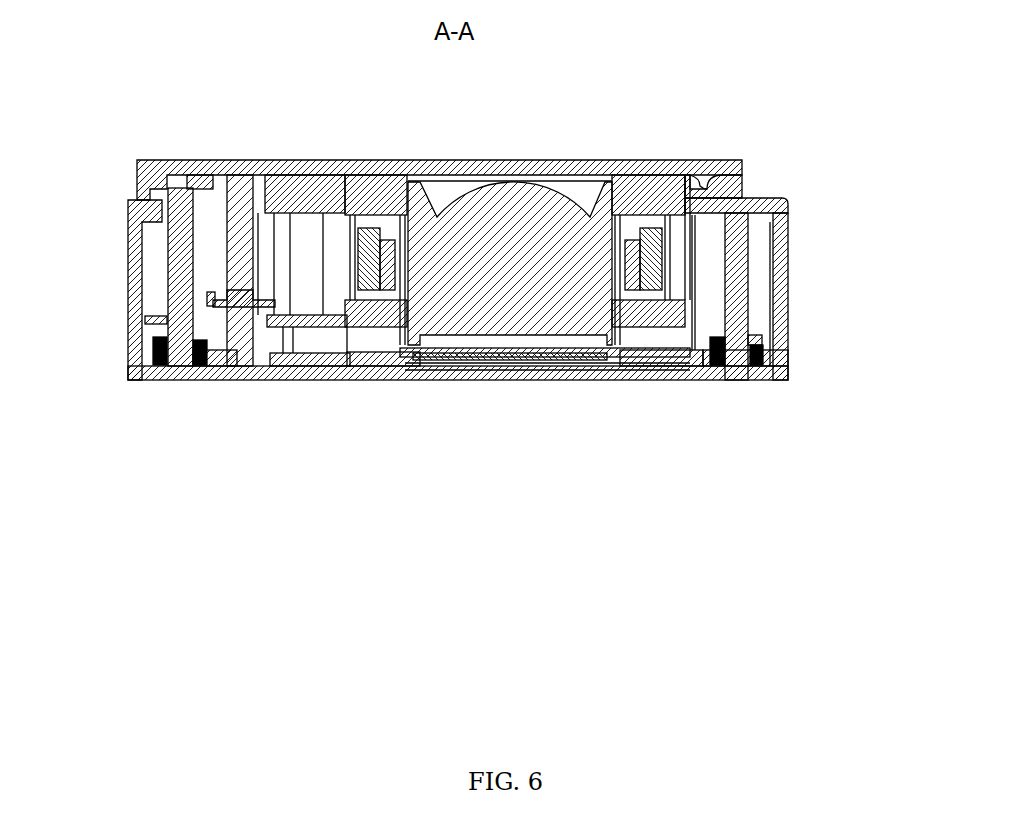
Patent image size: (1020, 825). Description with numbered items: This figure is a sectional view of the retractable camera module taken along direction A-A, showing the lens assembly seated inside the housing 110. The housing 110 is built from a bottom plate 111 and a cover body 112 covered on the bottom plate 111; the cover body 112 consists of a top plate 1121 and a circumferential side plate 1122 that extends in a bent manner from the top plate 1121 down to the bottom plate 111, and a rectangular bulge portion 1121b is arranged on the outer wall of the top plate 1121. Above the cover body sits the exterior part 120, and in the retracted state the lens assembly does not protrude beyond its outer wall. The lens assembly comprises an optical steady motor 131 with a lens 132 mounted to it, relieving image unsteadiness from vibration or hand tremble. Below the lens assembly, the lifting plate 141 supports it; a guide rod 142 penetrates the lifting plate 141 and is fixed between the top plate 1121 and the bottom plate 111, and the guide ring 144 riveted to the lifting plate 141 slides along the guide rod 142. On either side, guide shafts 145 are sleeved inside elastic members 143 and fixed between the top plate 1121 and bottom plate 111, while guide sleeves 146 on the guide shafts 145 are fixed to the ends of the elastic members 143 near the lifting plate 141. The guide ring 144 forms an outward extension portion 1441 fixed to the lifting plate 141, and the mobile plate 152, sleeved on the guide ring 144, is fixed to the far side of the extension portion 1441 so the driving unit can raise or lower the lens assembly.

The housing 110 is at (541, 277).
The bottom plate 111 is at (520, 351).
The cover body 112 is at (868, 208).
The top plate 1121 is at (790, 207).
The bulge portion 1121b is at (197, 170).
The circumferential side plate 1122 is at (790, 243).
The exterior part 120 is at (233, 168).
The optical steady motor 131 is at (648, 170).
The lens 132 is at (569, 183).
The lifting plate 141 is at (318, 380).
The guide rod 142 is at (222, 380).
The elastic members 143 is at (145, 342).
The guide ring 144 is at (275, 380).
The extension portion 1441 is at (213, 310).
The guide shafts 145 is at (178, 268).
The guide sleeves 146 is at (147, 320).
The mobile plate 152 is at (207, 298).